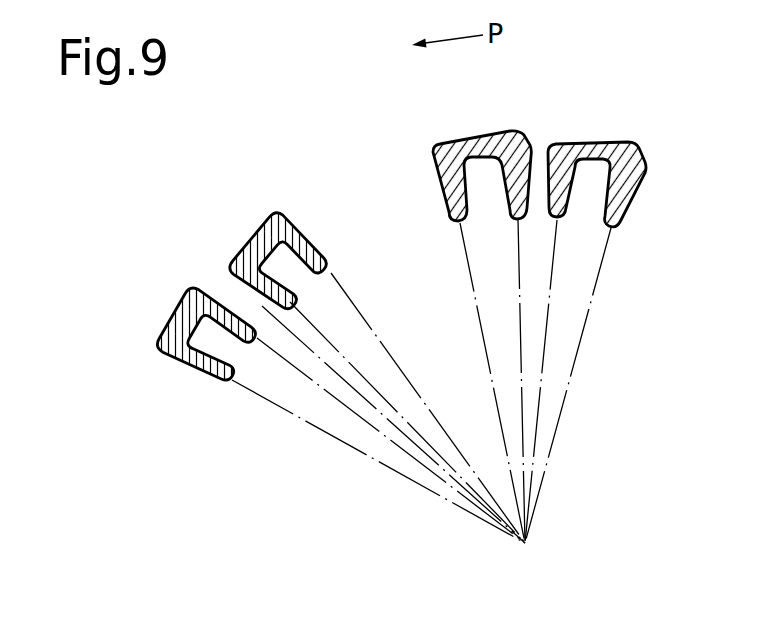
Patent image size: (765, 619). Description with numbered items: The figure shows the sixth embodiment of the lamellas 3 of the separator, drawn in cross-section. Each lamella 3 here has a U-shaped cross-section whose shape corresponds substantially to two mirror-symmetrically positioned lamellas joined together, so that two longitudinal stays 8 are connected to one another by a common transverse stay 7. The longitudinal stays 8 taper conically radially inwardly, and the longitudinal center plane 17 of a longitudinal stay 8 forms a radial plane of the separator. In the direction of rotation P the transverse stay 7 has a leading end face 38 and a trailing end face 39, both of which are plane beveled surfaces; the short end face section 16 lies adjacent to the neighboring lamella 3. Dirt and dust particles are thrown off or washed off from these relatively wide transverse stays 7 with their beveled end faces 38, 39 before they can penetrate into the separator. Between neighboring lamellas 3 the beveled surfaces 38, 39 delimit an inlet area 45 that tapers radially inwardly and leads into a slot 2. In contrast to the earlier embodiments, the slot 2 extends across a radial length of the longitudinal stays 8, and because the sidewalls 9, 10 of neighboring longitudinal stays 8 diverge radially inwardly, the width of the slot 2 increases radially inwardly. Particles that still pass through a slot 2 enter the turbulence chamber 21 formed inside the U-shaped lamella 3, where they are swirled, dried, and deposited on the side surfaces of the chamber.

The slot 2 is at (191, 364).
The lamella 3 is at (392, 260).
The transverse stay 7 is at (175, 325).
The longitudinal stay 8 is at (221, 306).
The sidewall 9 is at (289, 296).
The sidewall 10 is at (222, 311).
The end face section 16 is at (357, 400).
The longitudinal center plane 17 is at (384, 347).
The turbulence chamber 21 is at (283, 257).
The leading end face 38 is at (232, 258).
The trailing end face 39 is at (276, 212).
The inlet area 45 is at (535, 133).